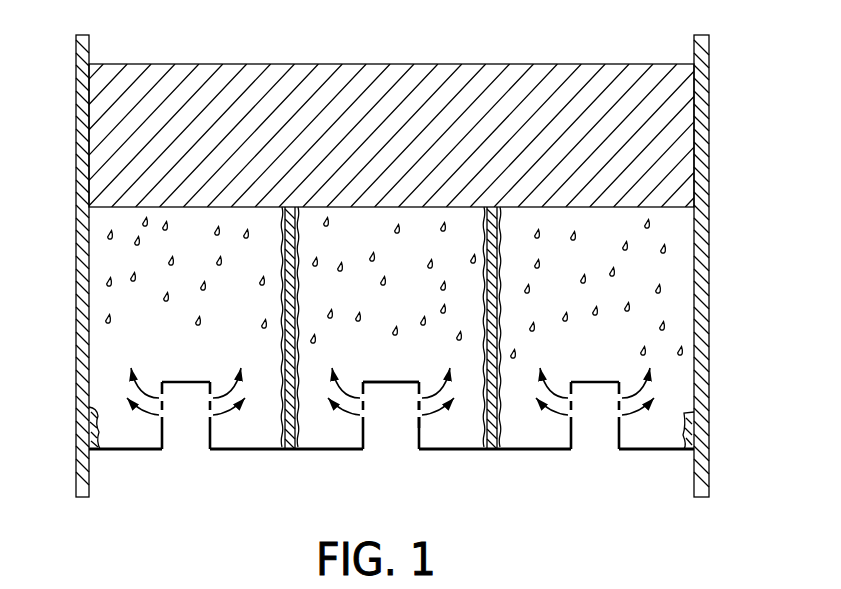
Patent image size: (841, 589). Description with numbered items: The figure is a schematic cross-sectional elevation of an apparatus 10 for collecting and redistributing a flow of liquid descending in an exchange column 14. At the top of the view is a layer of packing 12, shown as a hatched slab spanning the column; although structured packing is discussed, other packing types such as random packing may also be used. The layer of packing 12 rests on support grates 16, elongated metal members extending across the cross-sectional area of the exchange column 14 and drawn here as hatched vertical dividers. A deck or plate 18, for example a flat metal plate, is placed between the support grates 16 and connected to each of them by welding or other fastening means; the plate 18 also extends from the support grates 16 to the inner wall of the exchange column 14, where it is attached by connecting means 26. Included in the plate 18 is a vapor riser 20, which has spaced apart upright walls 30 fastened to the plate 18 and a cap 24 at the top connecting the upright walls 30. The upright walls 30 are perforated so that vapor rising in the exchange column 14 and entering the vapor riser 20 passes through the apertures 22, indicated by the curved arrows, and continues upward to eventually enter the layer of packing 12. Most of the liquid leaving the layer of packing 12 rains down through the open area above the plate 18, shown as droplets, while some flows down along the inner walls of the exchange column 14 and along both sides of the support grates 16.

The apparatus 10 is at (166, 533).
The layer of packing 12 is at (456, 63).
The exchange column 14 is at (710, 63).
The support grates 16 is at (283, 416).
The plate 18 is at (655, 451).
The vapor riser 20 is at (375, 450).
The apertures 22 is at (410, 419).
The cap 24 is at (382, 381).
The connecting means 26 is at (95, 440).
The upright walls 30 is at (420, 426).